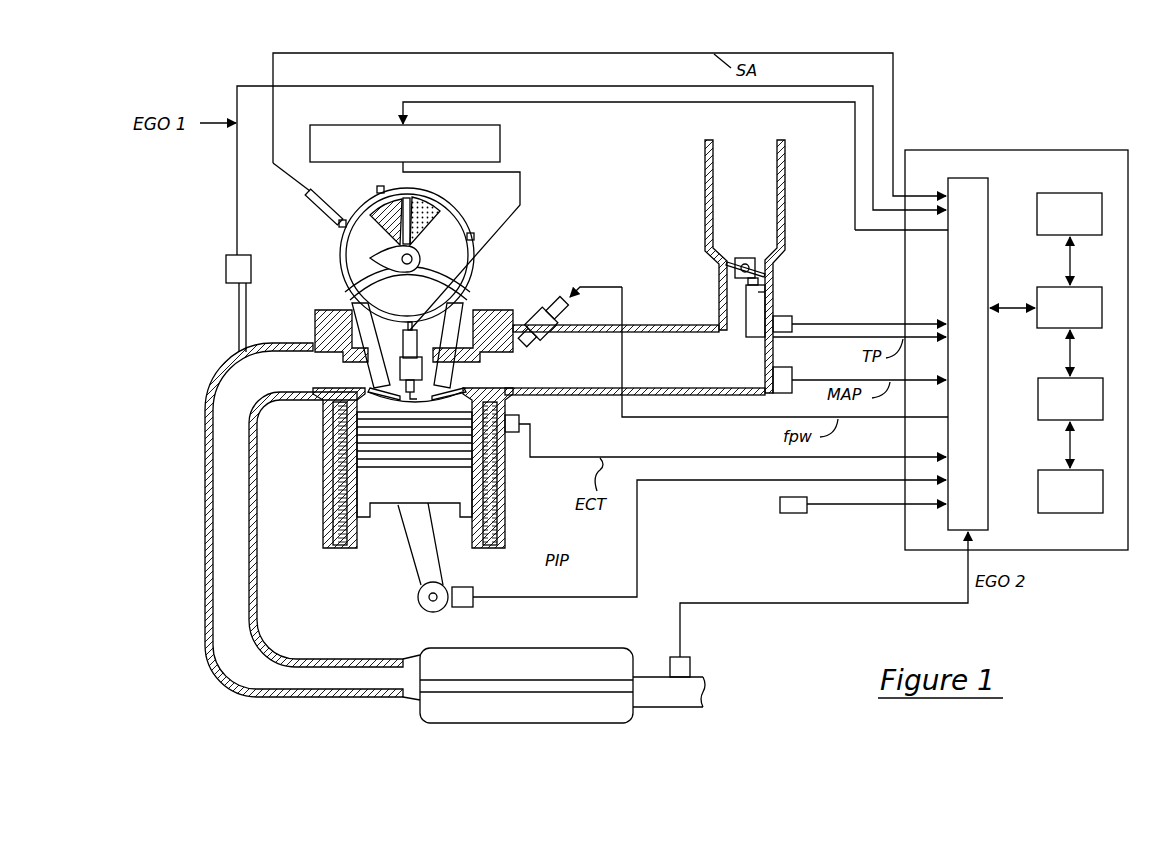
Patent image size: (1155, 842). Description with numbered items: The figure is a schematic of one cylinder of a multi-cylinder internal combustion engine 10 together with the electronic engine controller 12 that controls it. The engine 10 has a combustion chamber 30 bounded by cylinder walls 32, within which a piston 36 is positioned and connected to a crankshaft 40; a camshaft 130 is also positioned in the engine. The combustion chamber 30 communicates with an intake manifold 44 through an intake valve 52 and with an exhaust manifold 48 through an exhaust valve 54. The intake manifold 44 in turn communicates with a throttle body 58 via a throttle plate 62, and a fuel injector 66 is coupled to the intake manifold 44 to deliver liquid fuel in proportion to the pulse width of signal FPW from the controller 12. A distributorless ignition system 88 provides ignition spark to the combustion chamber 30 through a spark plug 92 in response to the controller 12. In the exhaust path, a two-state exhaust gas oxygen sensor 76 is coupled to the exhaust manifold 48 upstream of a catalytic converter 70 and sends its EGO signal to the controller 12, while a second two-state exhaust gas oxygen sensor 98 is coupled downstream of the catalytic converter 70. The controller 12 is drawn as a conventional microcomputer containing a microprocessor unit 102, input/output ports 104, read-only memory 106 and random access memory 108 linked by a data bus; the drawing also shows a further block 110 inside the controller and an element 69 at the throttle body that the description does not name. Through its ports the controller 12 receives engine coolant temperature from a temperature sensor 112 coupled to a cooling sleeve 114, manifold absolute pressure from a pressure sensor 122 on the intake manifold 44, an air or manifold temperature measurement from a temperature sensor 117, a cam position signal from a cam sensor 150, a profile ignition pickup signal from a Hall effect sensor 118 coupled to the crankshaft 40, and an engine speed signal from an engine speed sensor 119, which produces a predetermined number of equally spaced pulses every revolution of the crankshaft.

The internal combustion engine 10 is at (500, 262).
The electronic engine controller 12 is at (1010, 150).
The combustion chamber 30 is at (323, 443).
The cylinder walls 32 is at (358, 548).
The piston 36 is at (418, 491).
The crankshaft 40 is at (418, 600).
The intake manifold 44 is at (704, 372).
The exhaust manifold 48 is at (210, 405).
The intake valve 52 is at (452, 381).
The exhaust valve 54 is at (370, 381).
The throttle body 58 is at (721, 312).
The throttle plate 62 is at (738, 261).
The fuel injector 66 is at (548, 337).
The throttle position sensor 69 is at (773, 293).
The catalytic converter 70 is at (497, 648).
The two-state exhaust gas oxygen sensor 76 is at (226, 270).
The distributorless ignition system 88 is at (313, 125).
The spark plug 92 is at (408, 325).
The two-state exhaust gas oxygen sensor 98 is at (671, 652).
The microprocessor unit 102 is at (1045, 287).
The input/output ports 104 is at (988, 188).
The read-only memory 106 is at (1068, 193).
The random access memory 108 is at (1048, 378).
The keep alive memory 110 is at (1048, 470).
The temperature sensor 112 is at (521, 425).
The cooling sleeve 114 is at (332, 551).
The temperature sensor 117 is at (796, 325).
The Hall effect sensor 118 is at (471, 588).
The engine speed sensor 119 is at (797, 516).
The pressure sensor 122 is at (793, 371).
The camshaft 130 is at (372, 258).
The cam sensor 150 is at (318, 214).